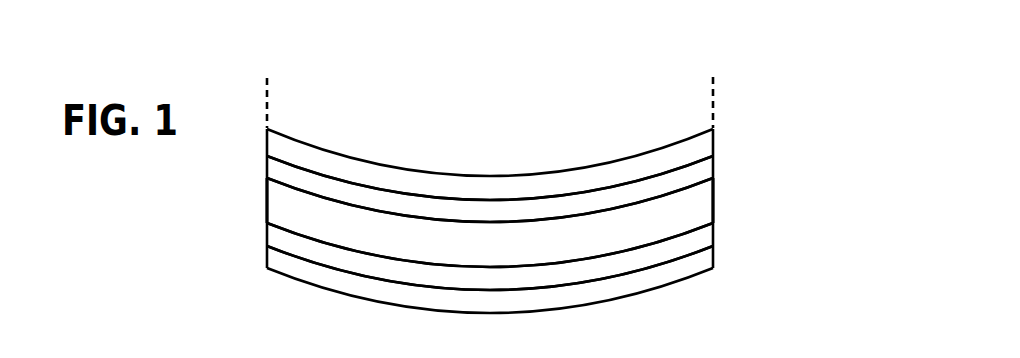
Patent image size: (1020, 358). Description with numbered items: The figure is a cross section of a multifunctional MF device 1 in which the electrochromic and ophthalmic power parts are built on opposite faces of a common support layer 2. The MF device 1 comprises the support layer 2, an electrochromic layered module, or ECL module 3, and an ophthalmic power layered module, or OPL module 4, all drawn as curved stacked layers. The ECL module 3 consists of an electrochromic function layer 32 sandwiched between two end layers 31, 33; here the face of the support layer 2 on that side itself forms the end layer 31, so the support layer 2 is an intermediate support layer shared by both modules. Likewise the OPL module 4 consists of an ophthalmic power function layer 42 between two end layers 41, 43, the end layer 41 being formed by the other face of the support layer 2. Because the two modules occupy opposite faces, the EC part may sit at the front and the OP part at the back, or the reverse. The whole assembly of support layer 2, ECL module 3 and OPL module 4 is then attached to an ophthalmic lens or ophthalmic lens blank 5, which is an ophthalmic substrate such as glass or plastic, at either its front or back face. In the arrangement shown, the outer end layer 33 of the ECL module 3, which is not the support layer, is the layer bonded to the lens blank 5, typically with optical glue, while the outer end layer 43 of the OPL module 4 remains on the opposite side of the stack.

The MF device 1 is at (748, 78).
The support layer 2 is at (713, 200).
The electrochromic layered module 3 is at (252, 137).
The ophthalmic power layered module 4 is at (252, 203).
The ophthalmic lens or ophthalmic lens blank 5 is at (298, 120).
The end layer 31 is at (698, 195).
The electrochromic function layer 32 is at (705, 170).
The end layer 33 is at (703, 150).
The end layer 41 is at (703, 214).
The ophthalmic power function layer 42 is at (713, 235).
The end layer 43 is at (713, 257).